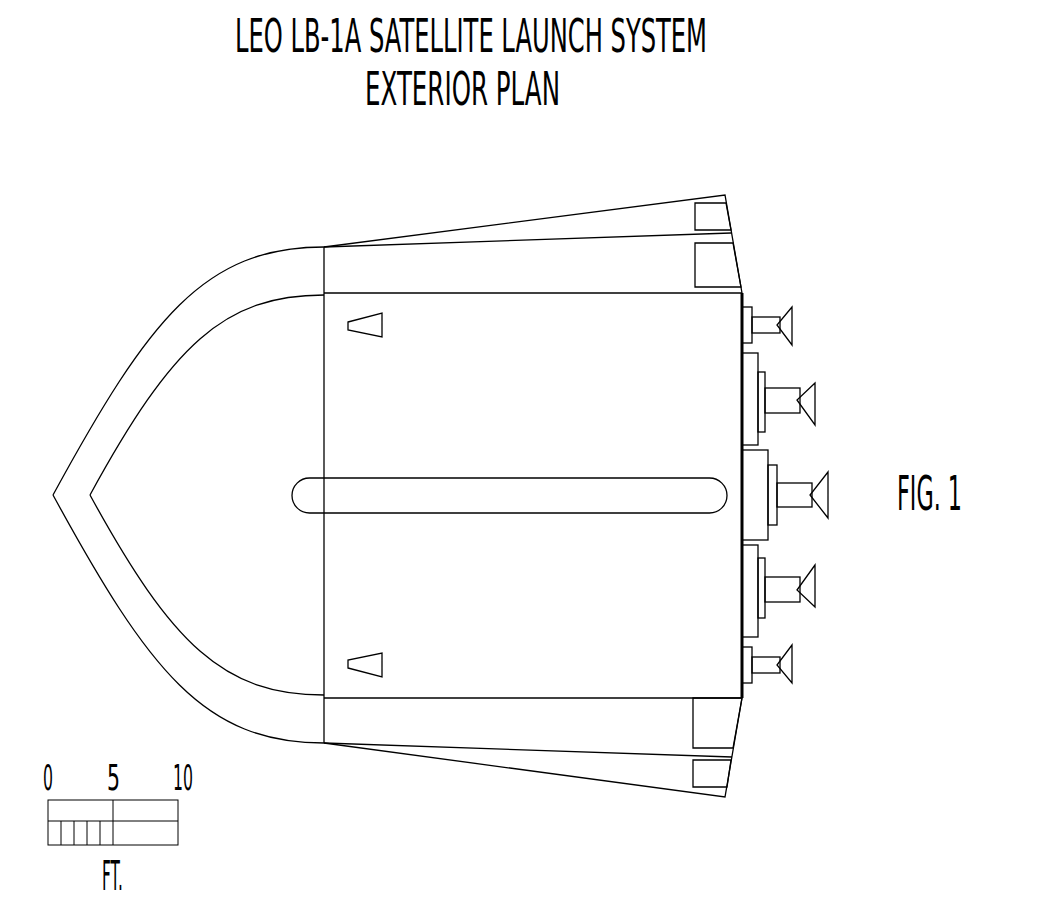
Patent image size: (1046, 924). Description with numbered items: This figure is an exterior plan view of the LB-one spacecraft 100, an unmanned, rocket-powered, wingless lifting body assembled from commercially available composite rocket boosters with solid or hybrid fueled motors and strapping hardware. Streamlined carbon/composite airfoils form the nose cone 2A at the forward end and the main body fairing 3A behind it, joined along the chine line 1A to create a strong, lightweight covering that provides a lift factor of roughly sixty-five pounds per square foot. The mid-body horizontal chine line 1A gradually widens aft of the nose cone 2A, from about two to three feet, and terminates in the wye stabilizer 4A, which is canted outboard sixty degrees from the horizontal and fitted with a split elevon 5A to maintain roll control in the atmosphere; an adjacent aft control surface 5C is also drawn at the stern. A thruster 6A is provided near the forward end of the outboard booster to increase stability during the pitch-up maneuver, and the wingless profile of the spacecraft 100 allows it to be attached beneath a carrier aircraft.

The LB-1 spacecraft 100 is at (158, 188).
The chine line 1A is at (132, 363).
The nose cone 2A is at (243, 427).
The main body fairing 3A is at (481, 628).
The wye stabilizer 4A is at (610, 767).
The split elevon 5A is at (723, 777).
The aft equipment box 5C is at (723, 725).
The thruster 6A is at (377, 310).